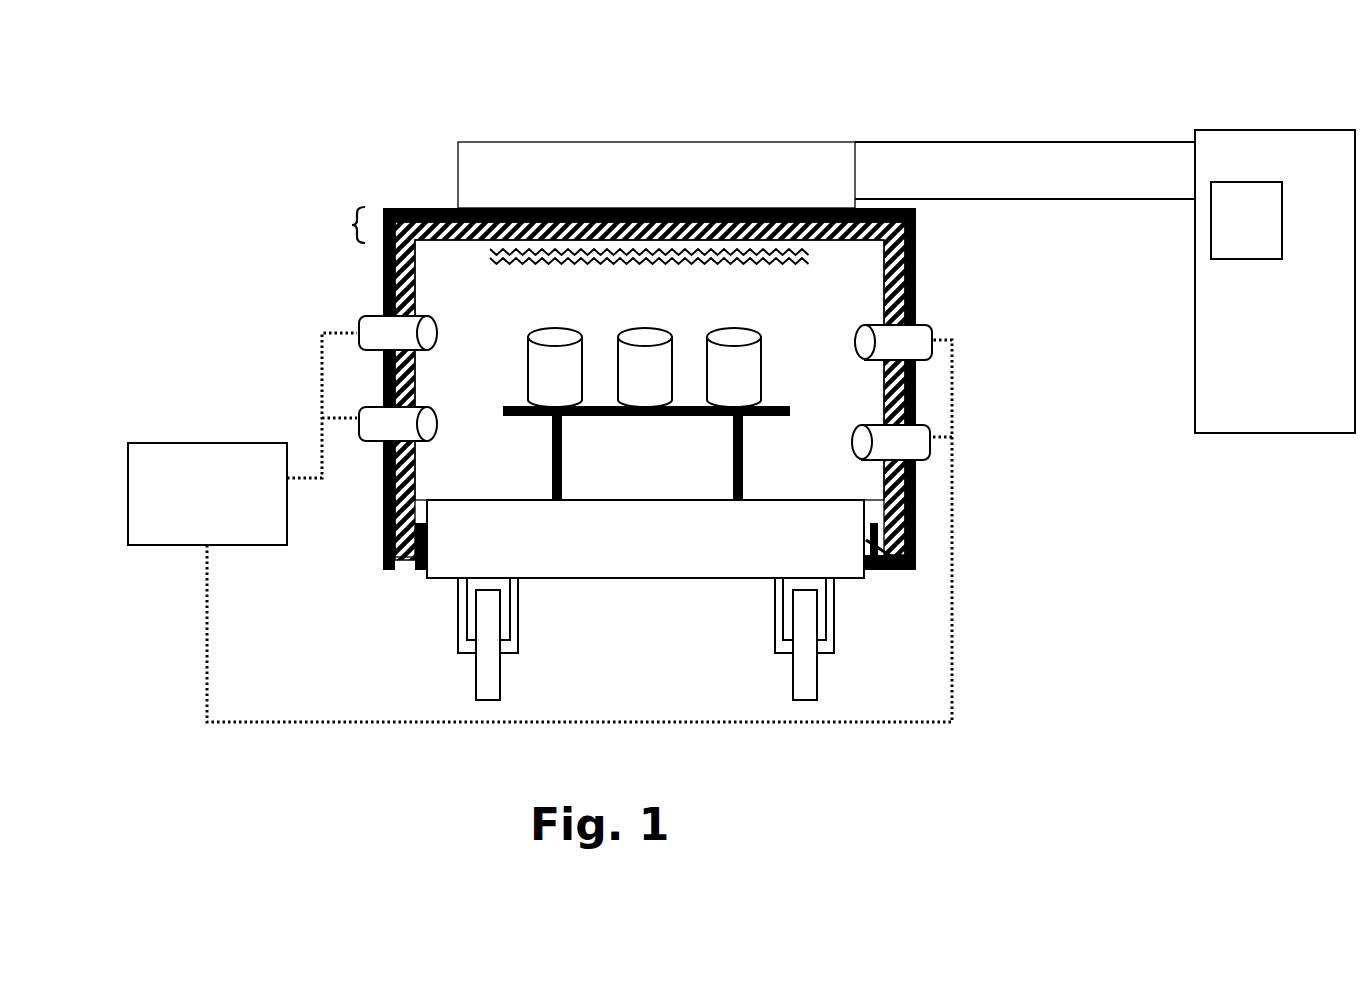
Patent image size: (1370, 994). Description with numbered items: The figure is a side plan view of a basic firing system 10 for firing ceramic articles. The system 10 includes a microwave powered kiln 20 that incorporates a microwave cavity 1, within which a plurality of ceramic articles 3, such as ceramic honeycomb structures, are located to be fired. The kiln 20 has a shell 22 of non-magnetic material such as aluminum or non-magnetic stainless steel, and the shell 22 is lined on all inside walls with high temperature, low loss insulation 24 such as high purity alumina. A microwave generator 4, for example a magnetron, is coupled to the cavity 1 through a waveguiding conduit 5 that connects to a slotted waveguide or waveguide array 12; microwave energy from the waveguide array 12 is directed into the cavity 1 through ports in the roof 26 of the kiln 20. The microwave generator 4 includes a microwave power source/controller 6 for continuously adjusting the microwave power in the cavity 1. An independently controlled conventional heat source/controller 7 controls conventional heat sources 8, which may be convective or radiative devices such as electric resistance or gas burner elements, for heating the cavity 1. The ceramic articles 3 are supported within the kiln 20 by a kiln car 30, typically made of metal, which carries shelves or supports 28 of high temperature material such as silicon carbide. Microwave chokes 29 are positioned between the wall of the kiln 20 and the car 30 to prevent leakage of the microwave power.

The microwave cavity 1 is at (811, 325).
The ceramic articles 3 is at (542, 392).
The microwave generator 4 is at (1275, 433).
The waveguiding conduit 5 is at (958, 142).
The microwave power source/controller 6 is at (1282, 182).
The conventional heat source/controller 7 is at (128, 443).
The conventional heat sources 8 is at (360, 415).
The firing system 10 is at (1115, 681).
The slotted waveguide or waveguide array 12 is at (688, 142).
The microwave powered kiln 20 is at (385, 575).
The shell 22 is at (913, 247).
The insulation 24 is at (890, 314).
The roof 26 is at (345, 222).
The shelves or supports 28 is at (685, 416).
The microwave chokes 29 is at (910, 558).
The kiln car 30 is at (610, 530).